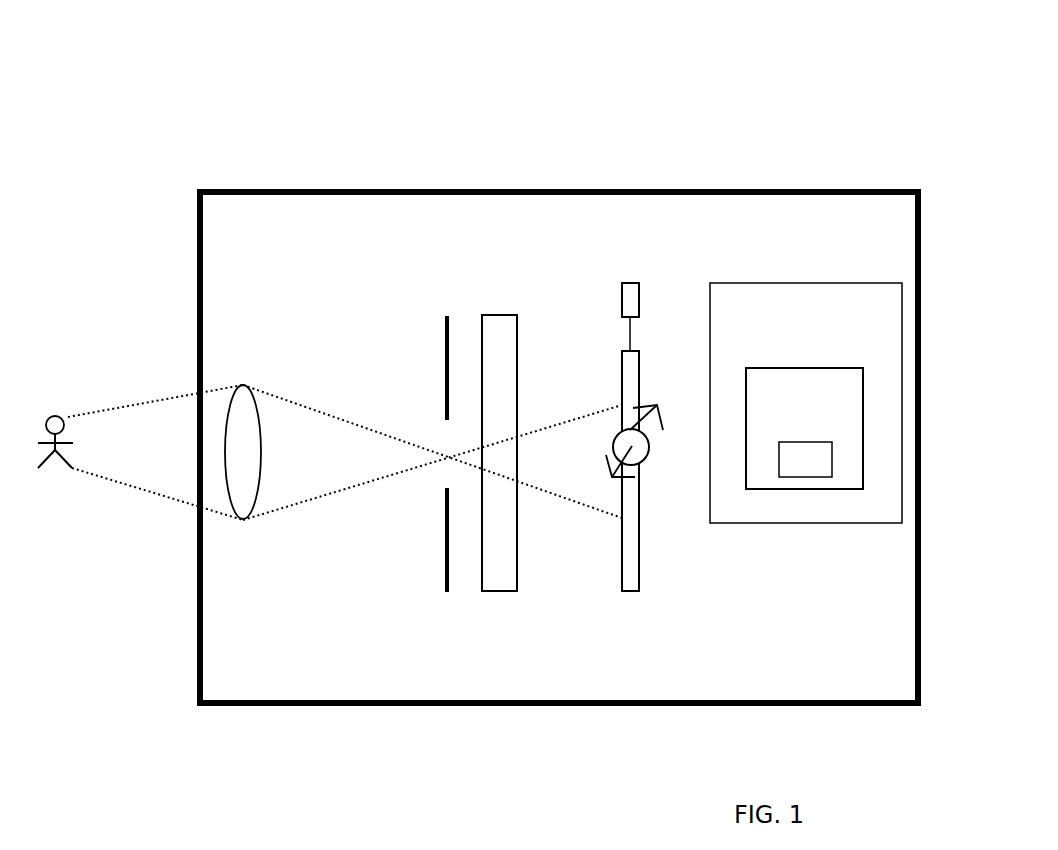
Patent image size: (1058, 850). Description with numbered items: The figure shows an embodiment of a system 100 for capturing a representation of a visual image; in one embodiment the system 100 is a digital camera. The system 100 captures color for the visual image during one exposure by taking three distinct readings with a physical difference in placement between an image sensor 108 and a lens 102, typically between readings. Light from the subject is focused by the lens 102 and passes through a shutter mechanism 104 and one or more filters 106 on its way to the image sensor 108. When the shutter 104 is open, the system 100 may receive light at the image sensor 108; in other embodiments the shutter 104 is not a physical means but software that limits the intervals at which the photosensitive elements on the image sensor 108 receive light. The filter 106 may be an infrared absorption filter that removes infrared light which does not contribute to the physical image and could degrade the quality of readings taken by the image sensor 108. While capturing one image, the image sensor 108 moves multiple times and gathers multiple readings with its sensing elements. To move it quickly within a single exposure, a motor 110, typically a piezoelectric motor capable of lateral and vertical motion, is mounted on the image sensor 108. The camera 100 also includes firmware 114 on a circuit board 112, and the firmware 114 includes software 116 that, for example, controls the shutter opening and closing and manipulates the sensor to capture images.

The system 100 is at (232, 56).
The lens 102 is at (245, 375).
The shutter mechanism 104 is at (447, 305).
The filter 106 is at (503, 305).
The image sensor 108 is at (630, 602).
The motor 110 is at (630, 272).
The circuit board 112 is at (806, 403).
The firmware 114 is at (804, 428).
The software 116 is at (805, 459).